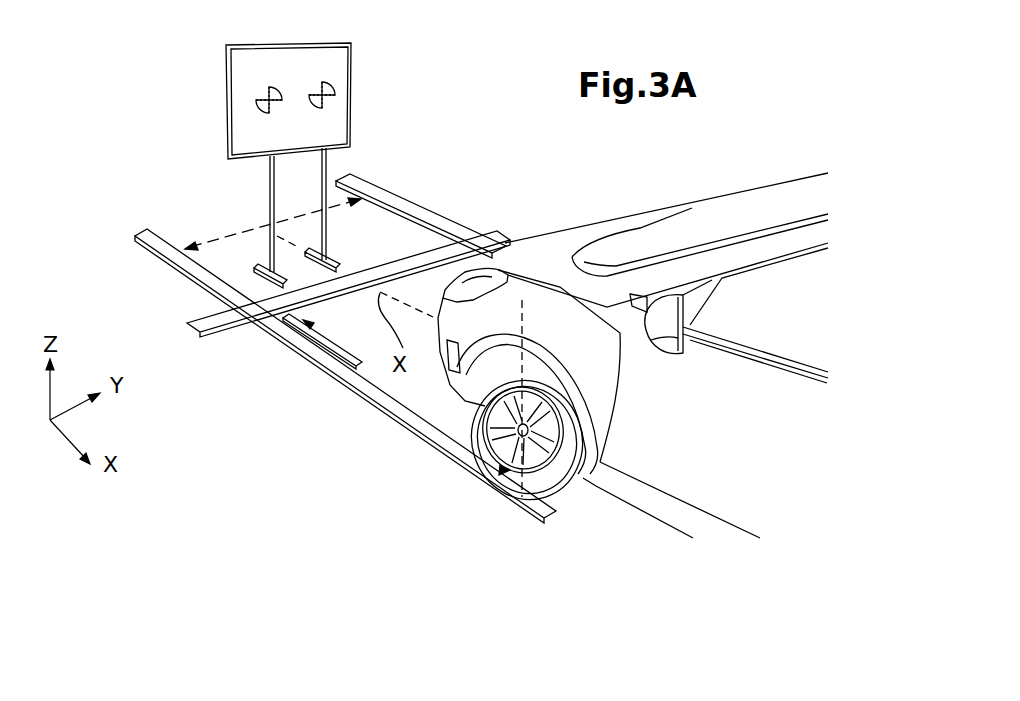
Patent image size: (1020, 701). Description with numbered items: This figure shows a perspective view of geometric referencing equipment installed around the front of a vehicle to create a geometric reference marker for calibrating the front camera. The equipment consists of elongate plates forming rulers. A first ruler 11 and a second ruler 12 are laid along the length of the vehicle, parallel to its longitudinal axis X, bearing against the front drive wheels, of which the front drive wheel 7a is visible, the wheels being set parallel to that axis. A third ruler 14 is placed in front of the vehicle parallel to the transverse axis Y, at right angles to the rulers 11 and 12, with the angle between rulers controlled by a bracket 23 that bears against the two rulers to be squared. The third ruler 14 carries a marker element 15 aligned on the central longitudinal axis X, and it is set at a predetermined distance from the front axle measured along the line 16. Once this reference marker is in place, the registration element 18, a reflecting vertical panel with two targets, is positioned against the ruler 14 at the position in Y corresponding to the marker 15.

The registration element 18 is at (228, 85).
The marker element 15 is at (343, 281).
The second ruler 12 is at (440, 222).
The third ruler 14 is at (217, 328).
The bracket 23 is at (310, 324).
The first ruler 11 is at (416, 434).
The line 16 is at (500, 471).
The front drive wheel 7a is at (584, 480).